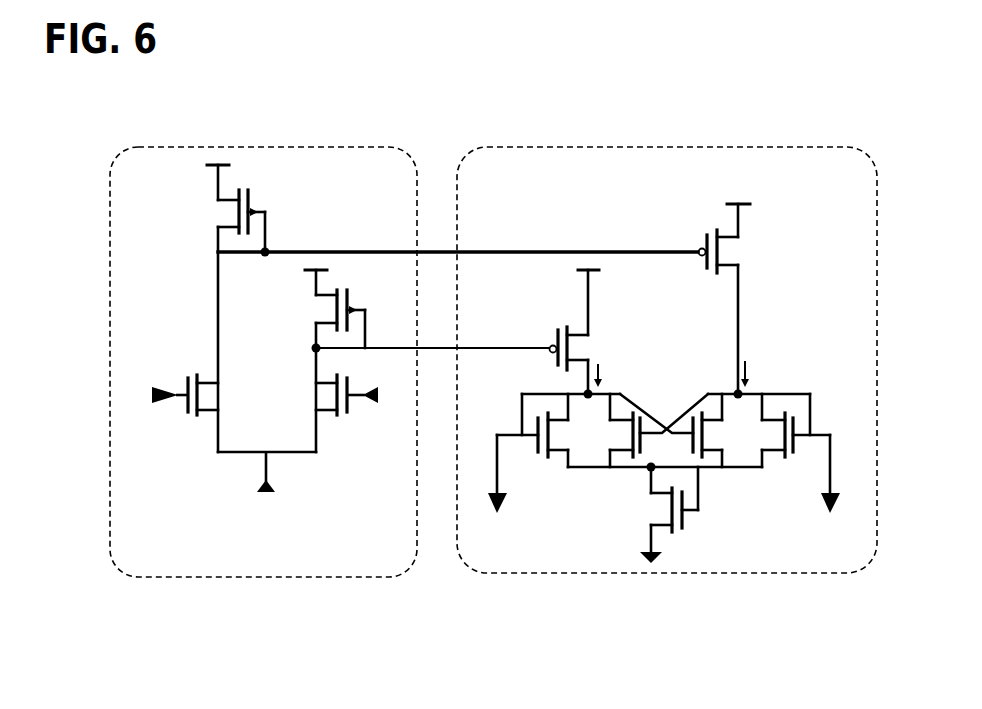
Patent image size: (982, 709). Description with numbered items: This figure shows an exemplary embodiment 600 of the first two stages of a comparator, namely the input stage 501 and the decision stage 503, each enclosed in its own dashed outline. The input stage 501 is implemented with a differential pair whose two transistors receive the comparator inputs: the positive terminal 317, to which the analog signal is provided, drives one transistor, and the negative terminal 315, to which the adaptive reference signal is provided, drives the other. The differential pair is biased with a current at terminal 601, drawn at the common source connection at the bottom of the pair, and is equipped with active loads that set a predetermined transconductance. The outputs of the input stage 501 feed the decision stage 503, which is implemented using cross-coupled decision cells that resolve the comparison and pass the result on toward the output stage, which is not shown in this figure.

The exemplary embodiment 600 is at (83, 107).
The input stage 501 is at (275, 147).
The decision stage 503 is at (590, 147).
The positive terminal 317 is at (165, 410).
The negative terminal 315 is at (378, 410).
The terminal 601 is at (262, 491).